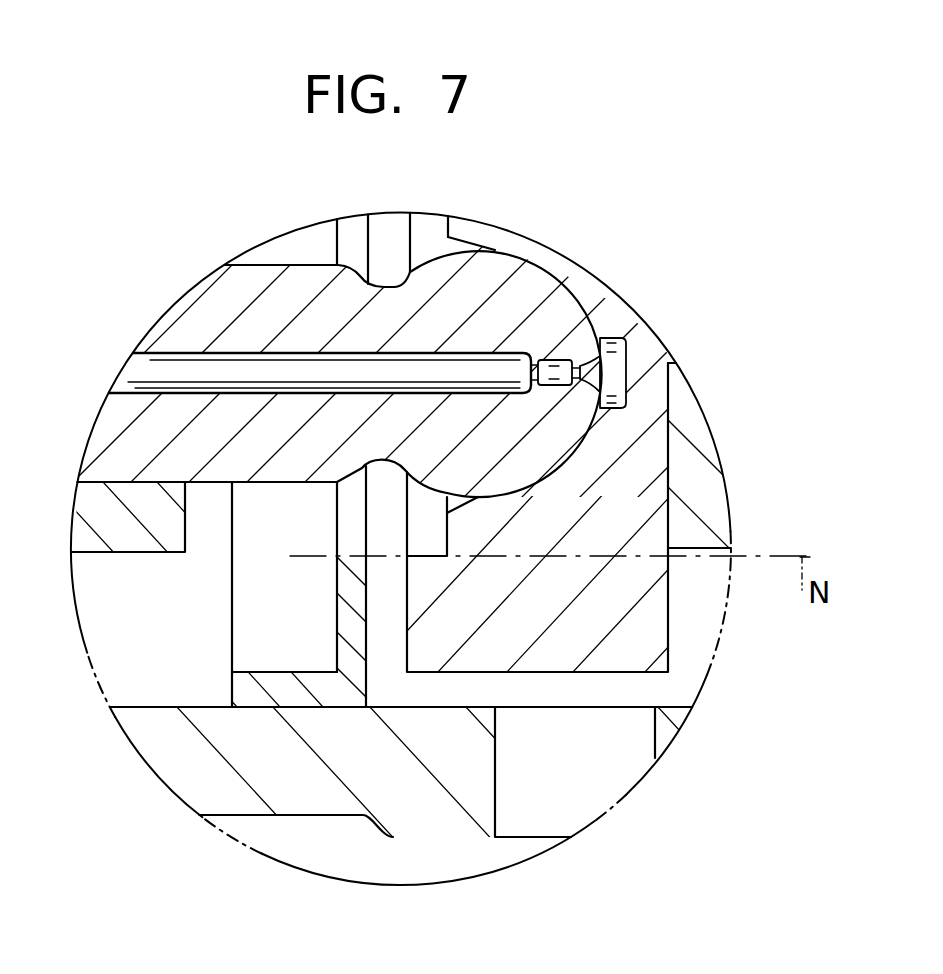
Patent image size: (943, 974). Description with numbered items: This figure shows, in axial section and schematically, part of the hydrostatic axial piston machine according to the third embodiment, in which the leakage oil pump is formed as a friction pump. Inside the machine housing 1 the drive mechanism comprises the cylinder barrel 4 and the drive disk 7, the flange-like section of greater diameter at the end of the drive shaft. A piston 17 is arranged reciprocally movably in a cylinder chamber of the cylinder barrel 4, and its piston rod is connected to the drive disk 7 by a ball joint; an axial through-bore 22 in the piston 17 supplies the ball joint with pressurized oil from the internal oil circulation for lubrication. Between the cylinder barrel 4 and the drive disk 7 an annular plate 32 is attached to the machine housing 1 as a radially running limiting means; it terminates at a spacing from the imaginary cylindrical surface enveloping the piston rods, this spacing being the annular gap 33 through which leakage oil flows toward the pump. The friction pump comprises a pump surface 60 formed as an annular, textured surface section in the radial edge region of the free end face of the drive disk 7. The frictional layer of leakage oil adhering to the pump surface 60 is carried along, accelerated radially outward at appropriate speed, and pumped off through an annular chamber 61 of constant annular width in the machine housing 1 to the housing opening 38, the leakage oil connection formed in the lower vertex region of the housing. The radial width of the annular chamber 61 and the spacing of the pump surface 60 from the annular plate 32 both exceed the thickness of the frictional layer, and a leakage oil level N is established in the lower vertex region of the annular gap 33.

The machine housing 1 is at (270, 785).
The cylinder barrel 4 is at (85, 527).
The drive disk 7 is at (655, 601).
The piston 17 is at (500, 264).
The axial through-bore 22 is at (488, 396).
The annular plate 32 is at (348, 667).
The annular gap 33 is at (347, 525).
The housing opening 38 is at (613, 775).
The pump surface 60 is at (407, 623).
The annular chamber 61 is at (433, 692).